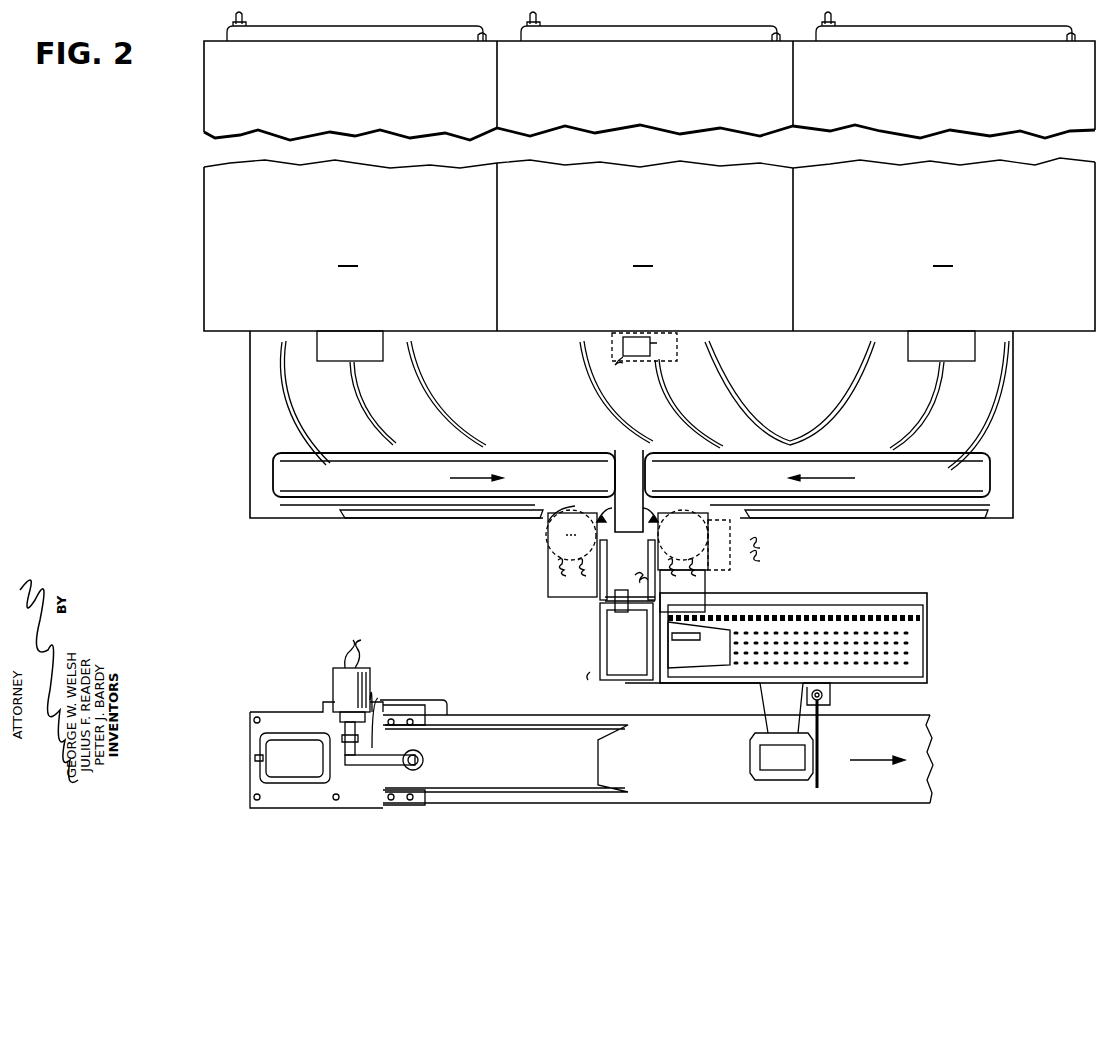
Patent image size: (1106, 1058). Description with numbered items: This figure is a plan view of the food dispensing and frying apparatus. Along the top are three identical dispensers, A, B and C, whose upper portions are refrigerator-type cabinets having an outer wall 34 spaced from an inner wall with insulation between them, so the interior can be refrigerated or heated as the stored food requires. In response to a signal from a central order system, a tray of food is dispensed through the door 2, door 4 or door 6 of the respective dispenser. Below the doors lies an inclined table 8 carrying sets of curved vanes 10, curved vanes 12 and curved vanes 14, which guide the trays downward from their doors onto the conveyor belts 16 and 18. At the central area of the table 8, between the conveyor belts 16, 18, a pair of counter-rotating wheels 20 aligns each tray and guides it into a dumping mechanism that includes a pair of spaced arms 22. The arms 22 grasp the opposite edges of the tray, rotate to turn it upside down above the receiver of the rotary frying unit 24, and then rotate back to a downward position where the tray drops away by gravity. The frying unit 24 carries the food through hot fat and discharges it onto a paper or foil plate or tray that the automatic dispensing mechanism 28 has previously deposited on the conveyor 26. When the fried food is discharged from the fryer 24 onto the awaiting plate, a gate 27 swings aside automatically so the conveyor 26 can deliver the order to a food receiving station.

The outer wall 34 is at (204, 262).
The door 2 is at (410, 340).
The door 4 is at (707, 337).
The door 6 is at (1010, 340).
The inclined table 8 is at (250, 404).
The curved vanes 10 is at (352, 391).
The curved vanes 12 is at (675, 401).
The curved vanes 14 is at (930, 395).
The conveyor belt 16 is at (548, 440).
The conveyor belt 18 is at (865, 465).
The counter-rotating wheels 20 is at (577, 512).
The spaced arms 22 is at (615, 588).
The rotary frying unit 24 is at (908, 590).
The conveyor 26 is at (918, 715).
The gate 27 is at (822, 785).
The automatic dispensing mechanism 28 is at (318, 688).